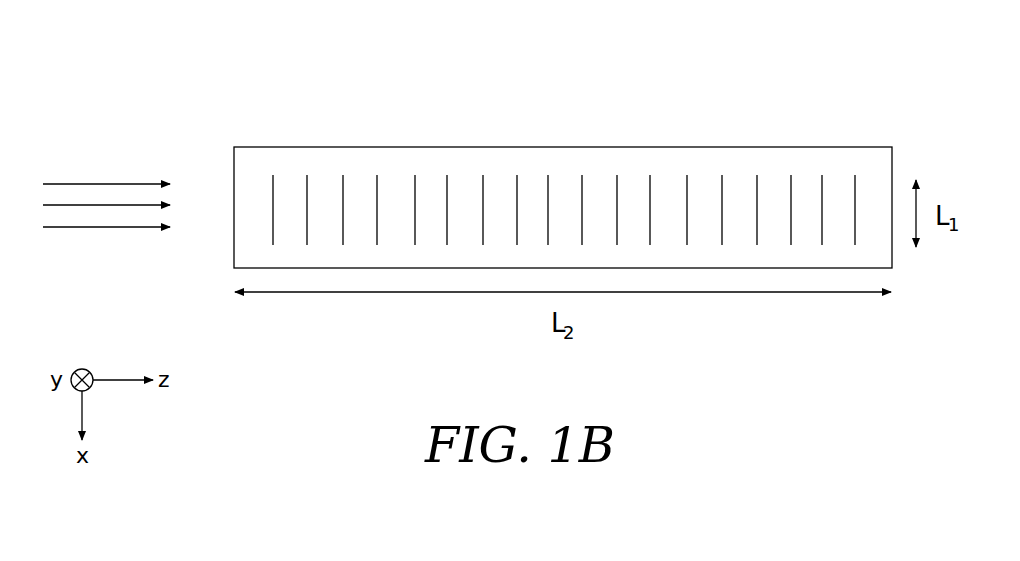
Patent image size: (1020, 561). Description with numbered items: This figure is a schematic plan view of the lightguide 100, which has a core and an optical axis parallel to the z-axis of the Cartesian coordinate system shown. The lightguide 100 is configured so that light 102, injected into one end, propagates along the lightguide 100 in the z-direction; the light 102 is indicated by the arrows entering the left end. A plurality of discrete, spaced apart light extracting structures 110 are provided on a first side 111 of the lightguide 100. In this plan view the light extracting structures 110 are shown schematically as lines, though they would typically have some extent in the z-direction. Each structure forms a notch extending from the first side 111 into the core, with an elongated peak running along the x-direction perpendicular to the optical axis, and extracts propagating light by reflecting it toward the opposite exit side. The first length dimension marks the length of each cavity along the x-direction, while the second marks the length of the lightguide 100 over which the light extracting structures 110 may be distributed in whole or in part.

The lightguide 100 is at (240, 60).
The light 102 is at (108, 227).
The light extracting structures 110 is at (548, 193).
The first side 111 is at (704, 162).